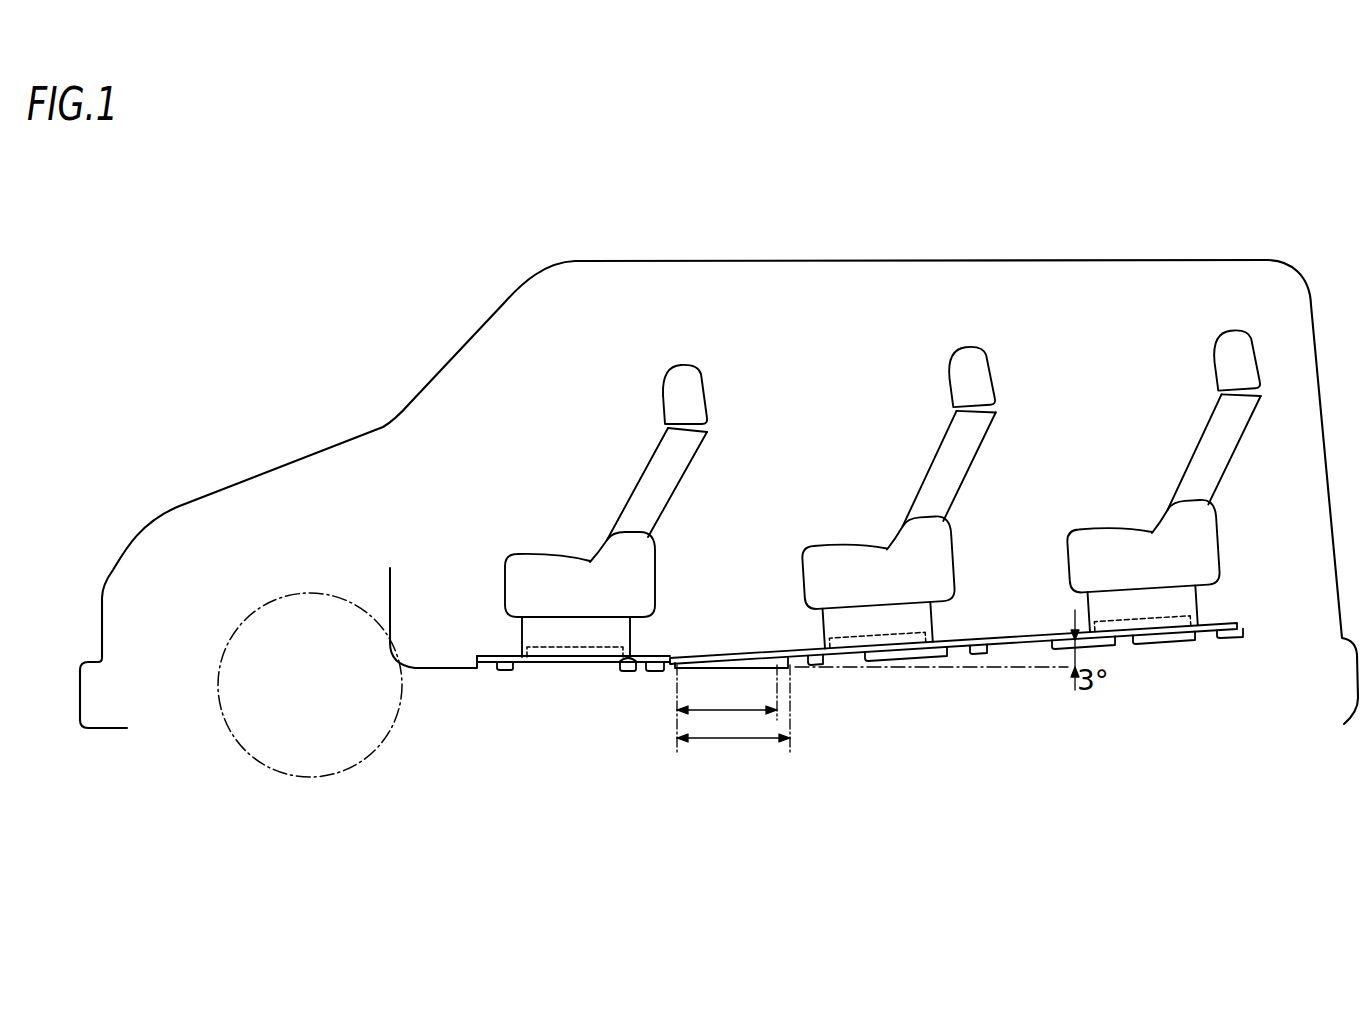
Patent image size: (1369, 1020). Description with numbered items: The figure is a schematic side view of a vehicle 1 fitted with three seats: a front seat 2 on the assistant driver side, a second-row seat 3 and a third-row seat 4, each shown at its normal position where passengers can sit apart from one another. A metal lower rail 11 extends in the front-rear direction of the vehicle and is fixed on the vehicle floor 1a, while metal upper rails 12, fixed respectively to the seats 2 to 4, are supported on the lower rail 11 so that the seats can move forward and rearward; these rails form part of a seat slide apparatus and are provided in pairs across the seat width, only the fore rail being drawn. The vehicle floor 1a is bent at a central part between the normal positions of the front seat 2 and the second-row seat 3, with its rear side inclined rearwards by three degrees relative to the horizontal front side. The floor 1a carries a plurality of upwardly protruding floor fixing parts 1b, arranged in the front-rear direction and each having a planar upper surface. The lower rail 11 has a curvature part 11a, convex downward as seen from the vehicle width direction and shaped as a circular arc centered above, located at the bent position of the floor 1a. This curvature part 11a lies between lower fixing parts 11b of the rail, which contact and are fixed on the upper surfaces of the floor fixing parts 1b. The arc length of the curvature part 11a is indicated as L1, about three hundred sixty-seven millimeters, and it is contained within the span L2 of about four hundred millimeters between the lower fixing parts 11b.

The vehicle 1 is at (380, 314).
The front seat 2 is at (543, 555).
The second-row seat 3 is at (840, 547).
The third-row seat 4 is at (1108, 532).
The lower rail 11 is at (511, 667).
The curvature part 11a is at (722, 652).
The lower fixing part 11b is at (663, 664).
The upper rail 12 is at (545, 647).
The vehicle floor 1a is at (623, 664).
The floor fixing part 1b is at (658, 660).
The length of curvature part L1 is at (710, 708).
The length between lower fixing parts L2 is at (738, 747).